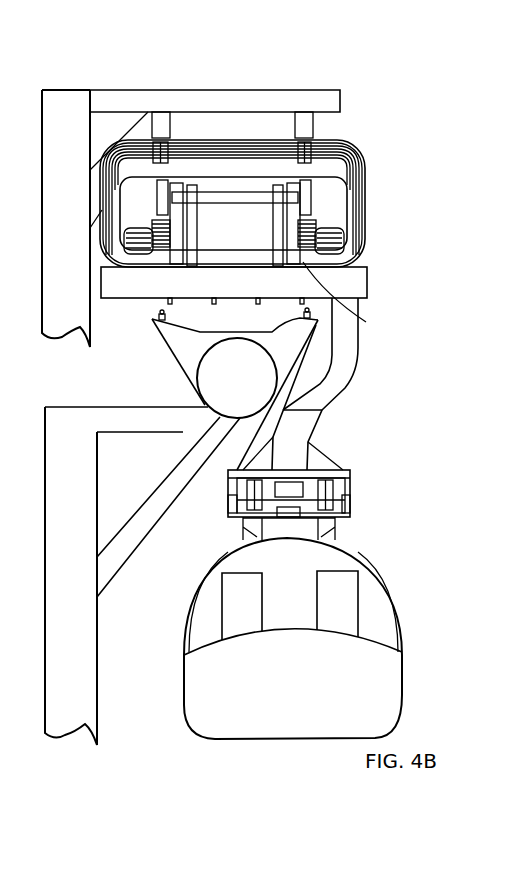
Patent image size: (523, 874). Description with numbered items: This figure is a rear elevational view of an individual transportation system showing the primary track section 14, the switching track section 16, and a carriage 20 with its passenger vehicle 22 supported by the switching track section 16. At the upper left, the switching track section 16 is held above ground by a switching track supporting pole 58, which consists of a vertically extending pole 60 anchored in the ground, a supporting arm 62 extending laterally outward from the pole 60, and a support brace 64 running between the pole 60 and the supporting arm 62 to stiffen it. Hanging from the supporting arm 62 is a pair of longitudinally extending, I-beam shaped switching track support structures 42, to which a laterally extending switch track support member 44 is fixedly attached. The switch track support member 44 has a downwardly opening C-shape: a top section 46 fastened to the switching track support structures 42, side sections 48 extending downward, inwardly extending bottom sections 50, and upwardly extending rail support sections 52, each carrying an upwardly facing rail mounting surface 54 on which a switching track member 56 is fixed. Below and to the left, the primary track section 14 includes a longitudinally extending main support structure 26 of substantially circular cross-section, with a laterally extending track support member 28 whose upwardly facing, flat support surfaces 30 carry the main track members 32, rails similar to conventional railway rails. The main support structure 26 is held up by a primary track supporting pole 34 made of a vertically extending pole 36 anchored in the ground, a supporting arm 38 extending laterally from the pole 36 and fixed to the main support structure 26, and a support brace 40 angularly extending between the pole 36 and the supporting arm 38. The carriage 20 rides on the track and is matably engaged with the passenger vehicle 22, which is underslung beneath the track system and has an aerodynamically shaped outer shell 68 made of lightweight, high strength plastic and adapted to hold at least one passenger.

The primary track section 14 is at (158, 362).
The switching track section 16 is at (380, 190).
The carriage 20 is at (382, 296).
The passenger vehicle 22 is at (371, 548).
The main support structure 26 is at (212, 388).
The track support member 28 is at (300, 353).
The support surface 30 is at (318, 320).
The main track member 32 is at (157, 314).
The primary track supporting pole 34 is at (112, 710).
The vertically extending pole 36 is at (98, 628).
The supporting arm 38 is at (112, 423).
The support brace 40 is at (143, 517).
The switching track support structure 42 is at (318, 124).
The switch track support member 44 is at (348, 239).
The top section 46 is at (348, 154).
The side section 48 is at (352, 205).
The bottom section 50 is at (343, 262).
The rail support section 52 is at (354, 300).
The rail mounting surface 54 is at (314, 233).
The switching track member 56 is at (107, 223).
The switching track supporting pole 58 is at (95, 79).
The vertically extending pole 60 is at (67, 110).
The supporting arm 62 is at (200, 97).
The support brace 64 is at (147, 122).
The outer shell 68 is at (183, 643).